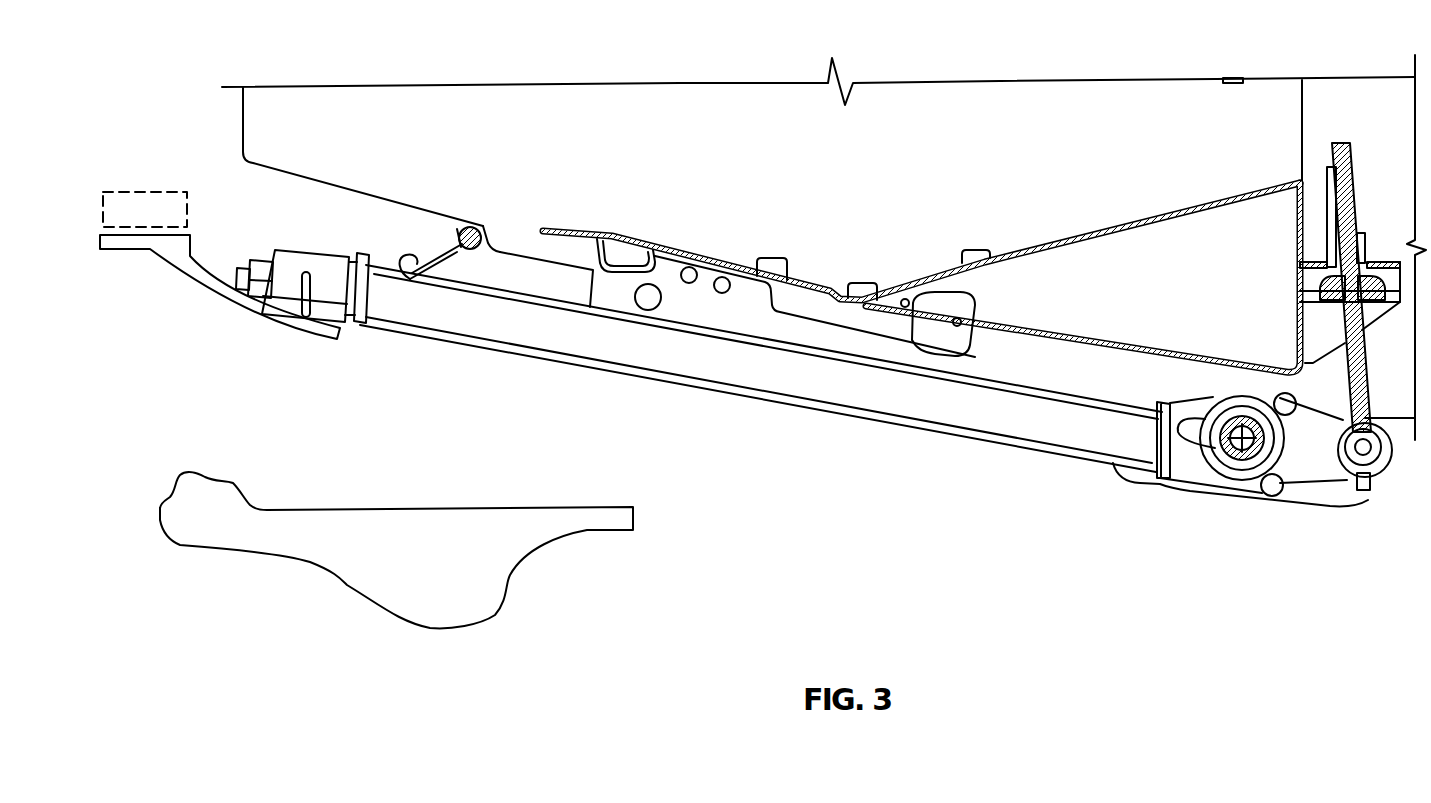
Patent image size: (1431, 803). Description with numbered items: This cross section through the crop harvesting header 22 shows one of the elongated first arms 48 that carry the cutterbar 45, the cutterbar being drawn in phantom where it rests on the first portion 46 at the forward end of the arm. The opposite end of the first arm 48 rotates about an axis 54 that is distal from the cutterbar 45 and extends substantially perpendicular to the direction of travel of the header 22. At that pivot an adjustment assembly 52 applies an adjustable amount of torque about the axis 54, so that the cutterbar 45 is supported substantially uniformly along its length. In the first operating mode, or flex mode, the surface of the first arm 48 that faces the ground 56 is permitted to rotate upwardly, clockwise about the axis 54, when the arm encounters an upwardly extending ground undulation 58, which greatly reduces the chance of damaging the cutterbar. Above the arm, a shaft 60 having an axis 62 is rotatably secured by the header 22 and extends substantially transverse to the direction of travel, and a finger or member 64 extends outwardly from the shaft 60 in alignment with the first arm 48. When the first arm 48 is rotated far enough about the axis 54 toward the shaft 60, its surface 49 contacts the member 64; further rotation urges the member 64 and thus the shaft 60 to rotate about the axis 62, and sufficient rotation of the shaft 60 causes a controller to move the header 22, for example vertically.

The header 22 is at (922, 166).
The cutterbar 45 is at (147, 192).
The first portion 46 is at (197, 287).
The first arm 48 is at (627, 352).
The surface 49 is at (493, 289).
The adjustment assembly 52 is at (1247, 363).
The axis 54 is at (1223, 437).
The ground 56 is at (355, 508).
The ground undulation 58 is at (207, 482).
The shaft 60 is at (463, 228).
The axis 62 is at (484, 226).
The member 64 is at (438, 253).